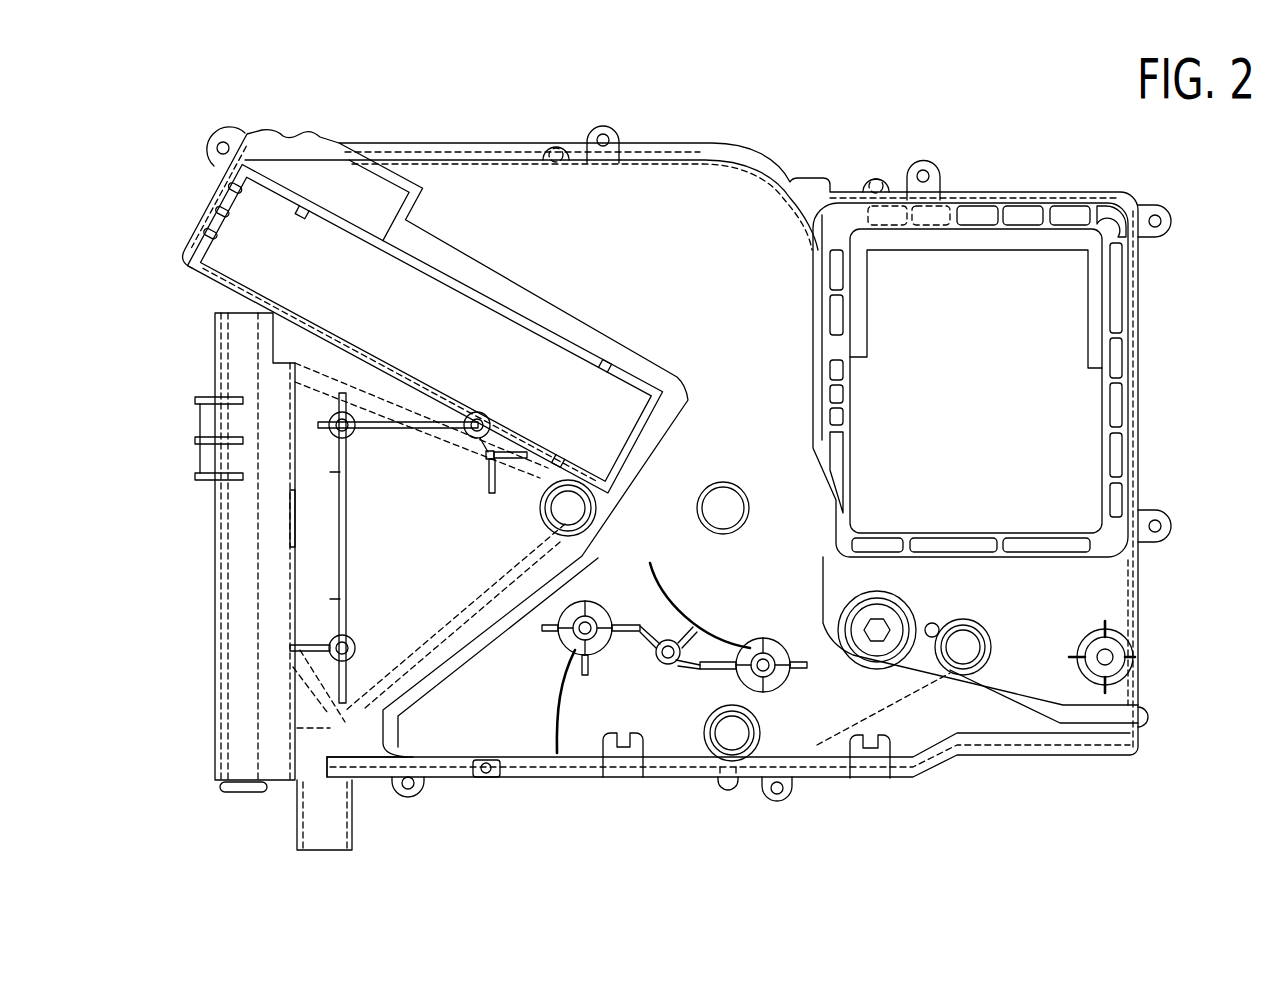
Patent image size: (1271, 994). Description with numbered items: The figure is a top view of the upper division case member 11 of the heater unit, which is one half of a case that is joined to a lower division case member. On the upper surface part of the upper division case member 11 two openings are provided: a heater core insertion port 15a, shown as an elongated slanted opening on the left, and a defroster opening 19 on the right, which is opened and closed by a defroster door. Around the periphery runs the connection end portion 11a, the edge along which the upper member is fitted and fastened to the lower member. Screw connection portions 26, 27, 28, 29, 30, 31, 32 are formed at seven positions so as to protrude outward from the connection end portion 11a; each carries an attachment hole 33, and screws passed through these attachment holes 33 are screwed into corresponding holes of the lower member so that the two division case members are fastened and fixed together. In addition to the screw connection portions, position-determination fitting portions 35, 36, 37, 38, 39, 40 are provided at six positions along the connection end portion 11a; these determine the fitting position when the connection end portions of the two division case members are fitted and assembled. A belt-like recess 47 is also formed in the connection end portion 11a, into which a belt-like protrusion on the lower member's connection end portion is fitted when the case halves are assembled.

The upper division case member 11 is at (742, 135).
The connection end portion 11a is at (688, 158).
The heater core insertion port 15a is at (470, 335).
The defroster opening 19 is at (1020, 415).
The screw connection portion 26 is at (422, 792).
The screw connection portion 27 is at (790, 797).
The screw connection portion 28 is at (1170, 510).
The screw connection portion 29 is at (1170, 205).
The screw connection portion 30 is at (940, 172).
The screw connection portion 31 is at (618, 130).
The screw connection portion 32 is at (212, 135).
The attachment hole 33 is at (223, 142).
The position-determination fitting portion 35 is at (360, 790).
The position-determination fitting portion 36 is at (484, 790).
The position-determination fitting portion 37 is at (727, 792).
The position-determination fitting portion 38 is at (1150, 718).
The position-determination fitting portion 39 is at (876, 178).
The position-determination fitting portion 40 is at (555, 153).
The belt-like recess 47 is at (455, 152).